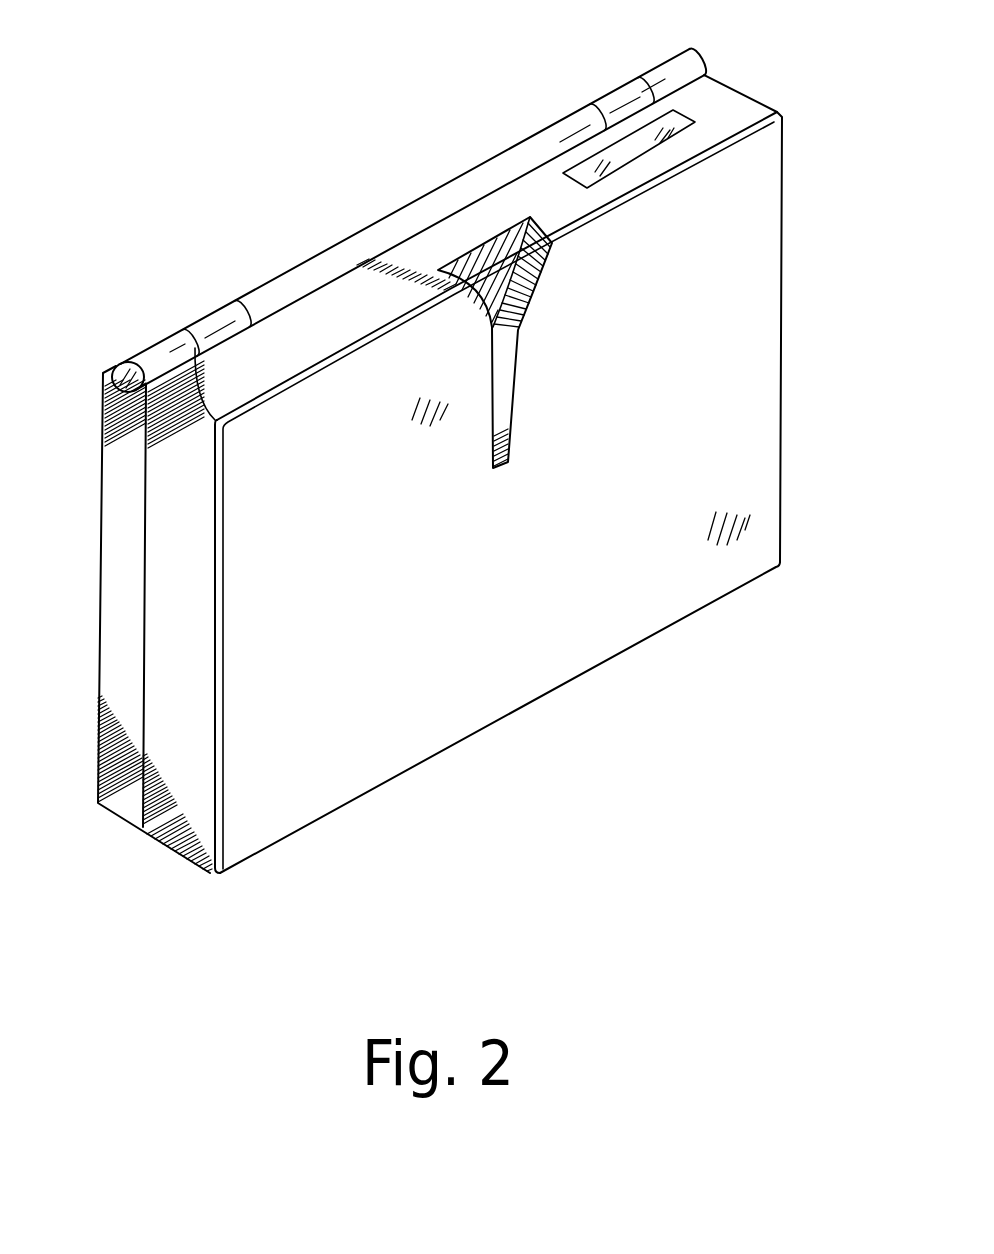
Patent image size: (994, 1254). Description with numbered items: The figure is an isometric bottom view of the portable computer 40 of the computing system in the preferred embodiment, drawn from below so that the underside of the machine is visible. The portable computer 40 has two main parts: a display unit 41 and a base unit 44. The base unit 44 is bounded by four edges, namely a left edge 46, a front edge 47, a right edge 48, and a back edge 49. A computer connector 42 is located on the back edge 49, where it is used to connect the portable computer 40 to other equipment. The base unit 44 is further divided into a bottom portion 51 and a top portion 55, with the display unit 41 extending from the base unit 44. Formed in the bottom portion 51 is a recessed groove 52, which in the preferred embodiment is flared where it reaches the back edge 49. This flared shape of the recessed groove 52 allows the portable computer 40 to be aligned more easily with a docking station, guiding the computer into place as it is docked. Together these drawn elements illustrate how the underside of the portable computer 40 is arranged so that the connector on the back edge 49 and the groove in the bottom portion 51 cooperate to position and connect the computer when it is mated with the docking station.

The portable computer 40 is at (806, 62).
The display unit 41 is at (303, 273).
The computer connector 42 is at (587, 170).
The base unit 44 is at (470, 215).
The left edge 46 is at (783, 190).
The front edge 47 is at (397, 773).
The right edge 48 is at (194, 593).
The back edge 49 is at (308, 353).
The bottom portion 51 is at (342, 493).
The recessed groove 52 is at (512, 300).
The top portion 55 is at (141, 470).